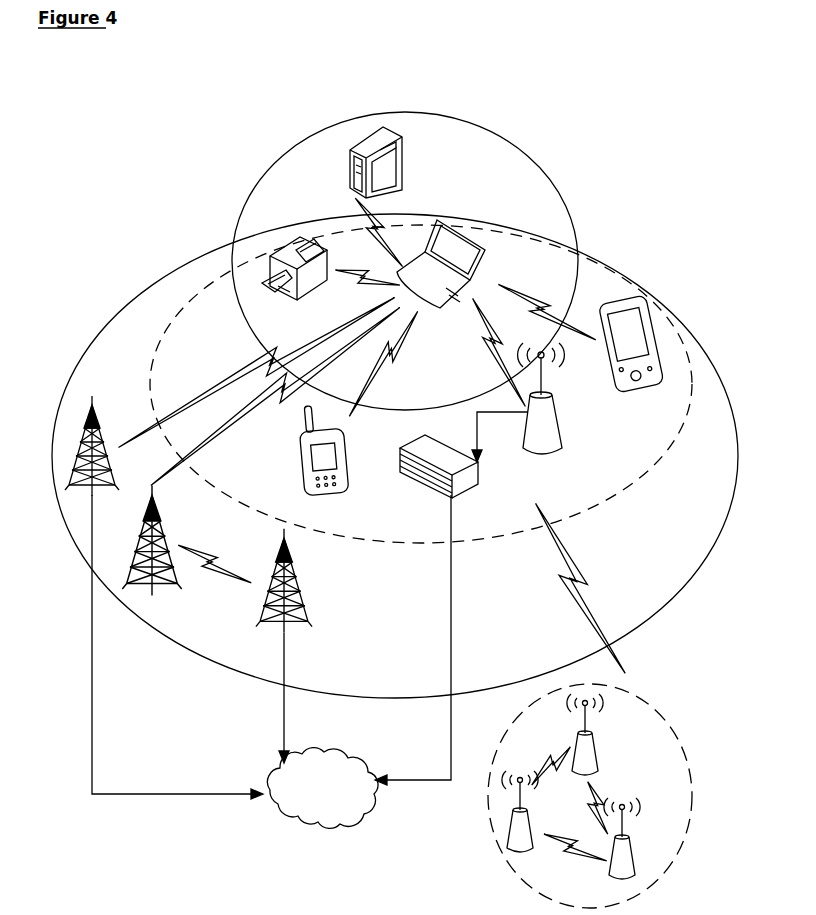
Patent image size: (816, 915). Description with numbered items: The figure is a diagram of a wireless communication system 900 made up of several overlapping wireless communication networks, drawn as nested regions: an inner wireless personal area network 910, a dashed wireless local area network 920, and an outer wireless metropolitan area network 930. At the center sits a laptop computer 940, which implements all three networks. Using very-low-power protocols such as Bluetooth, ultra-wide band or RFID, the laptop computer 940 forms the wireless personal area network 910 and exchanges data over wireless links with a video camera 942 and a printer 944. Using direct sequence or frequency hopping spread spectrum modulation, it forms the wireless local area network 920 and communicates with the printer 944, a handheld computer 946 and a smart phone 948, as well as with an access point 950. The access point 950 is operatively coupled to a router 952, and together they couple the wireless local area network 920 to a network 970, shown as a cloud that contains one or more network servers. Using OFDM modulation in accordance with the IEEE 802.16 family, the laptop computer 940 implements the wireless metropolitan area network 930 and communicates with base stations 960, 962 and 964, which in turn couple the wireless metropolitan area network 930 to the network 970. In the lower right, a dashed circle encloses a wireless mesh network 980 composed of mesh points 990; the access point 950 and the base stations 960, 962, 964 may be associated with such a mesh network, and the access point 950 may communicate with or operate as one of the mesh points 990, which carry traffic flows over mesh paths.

The wireless communication system 900 is at (600, 140).
The wireless personal area network 910 is at (235, 232).
The wireless local area network 920 is at (185, 298).
The wireless metropolitan area network 930 is at (118, 312).
The laptop computer 940 is at (478, 222).
The video camera 942 is at (405, 175).
The printer 944 is at (322, 300).
The handheld computer 946 is at (631, 388).
The smart phone 948 is at (342, 493).
The access point 950 is at (560, 454).
The router 952 is at (470, 495).
The base station 960 is at (93, 386).
The base station 962 is at (167, 545).
The base station 964 is at (300, 604).
The network 970 is at (370, 759).
The wireless mesh network 980 is at (644, 717).
The mesh points 990 is at (617, 781).